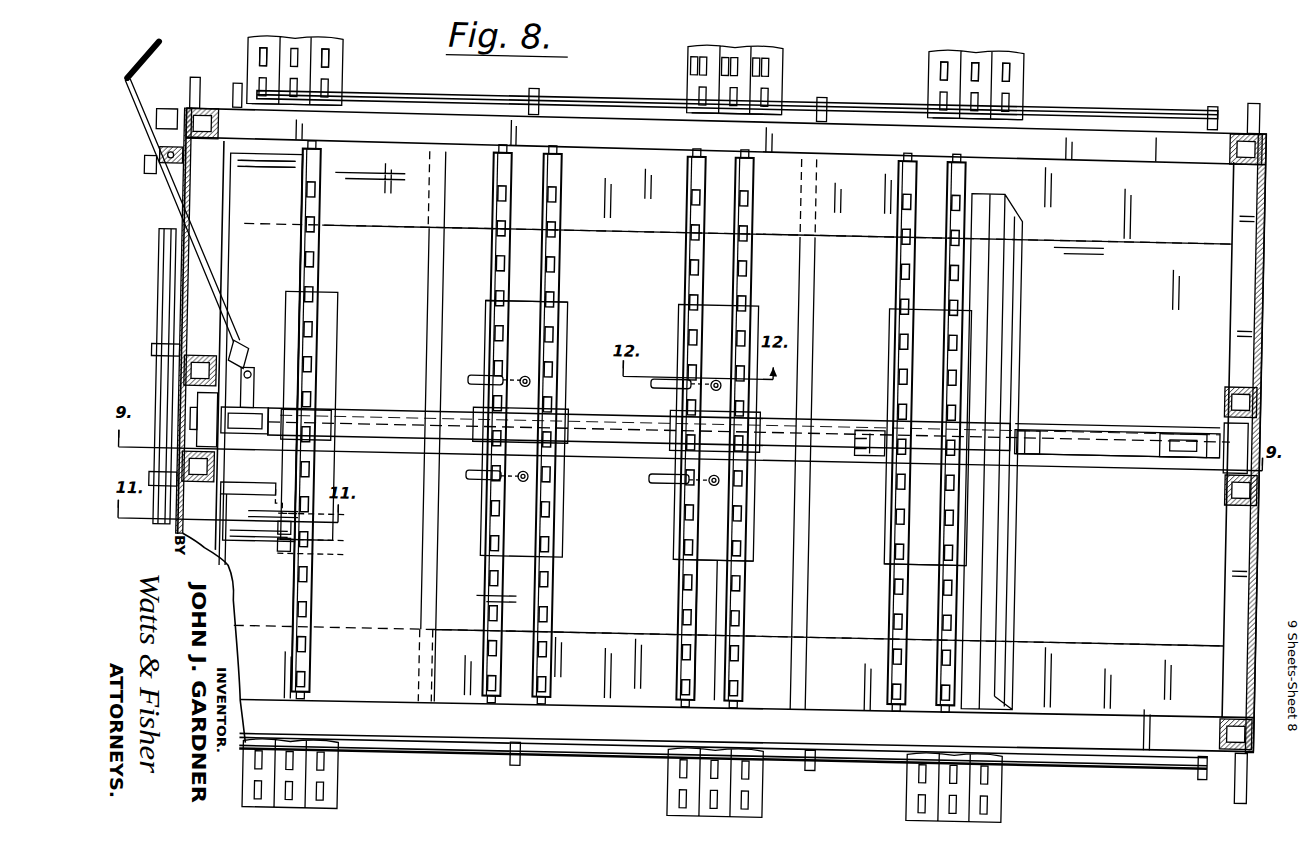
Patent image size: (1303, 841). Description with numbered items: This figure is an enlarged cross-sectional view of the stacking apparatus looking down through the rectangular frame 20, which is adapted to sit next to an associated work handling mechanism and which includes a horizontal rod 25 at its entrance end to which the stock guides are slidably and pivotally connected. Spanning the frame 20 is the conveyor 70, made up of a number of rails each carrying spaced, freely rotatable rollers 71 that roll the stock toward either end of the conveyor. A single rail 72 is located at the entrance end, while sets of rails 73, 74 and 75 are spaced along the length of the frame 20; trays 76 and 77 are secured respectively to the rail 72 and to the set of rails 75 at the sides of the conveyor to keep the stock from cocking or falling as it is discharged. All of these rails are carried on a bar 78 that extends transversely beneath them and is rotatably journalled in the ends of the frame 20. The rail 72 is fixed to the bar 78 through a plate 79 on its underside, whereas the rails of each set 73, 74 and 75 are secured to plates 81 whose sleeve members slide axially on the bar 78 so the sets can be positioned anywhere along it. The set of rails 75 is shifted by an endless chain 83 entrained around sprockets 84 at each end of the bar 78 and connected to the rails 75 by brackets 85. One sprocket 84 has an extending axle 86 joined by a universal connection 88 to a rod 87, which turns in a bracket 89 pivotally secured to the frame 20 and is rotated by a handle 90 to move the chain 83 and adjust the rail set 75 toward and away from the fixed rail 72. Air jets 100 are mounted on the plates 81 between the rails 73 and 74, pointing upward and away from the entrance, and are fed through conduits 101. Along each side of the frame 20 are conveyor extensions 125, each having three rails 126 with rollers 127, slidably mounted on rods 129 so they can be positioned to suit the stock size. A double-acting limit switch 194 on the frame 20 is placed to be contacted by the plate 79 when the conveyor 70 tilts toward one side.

The rectangular frame 20 is at (1258, 160).
The horizontal rod 25 is at (169, 273).
The conveyor 70 is at (566, 316).
The rollers 71 is at (315, 300).
The rail 72 is at (300, 296).
The set of rails 73 is at (487, 304).
The set of rails 74 is at (692, 550).
The set of rails 75 is at (897, 546).
The tray 76 is at (328, 318).
The tray 77 is at (998, 349).
The bar 78 is at (1069, 412).
The plate 79 is at (318, 338).
The plates 81 is at (717, 302).
The chain 83 is at (344, 427).
The sprockets 84 is at (241, 440).
The brackets 85 is at (869, 421).
The axle 86 is at (249, 409).
The rod 87 is at (212, 311).
The universal connection 88 is at (244, 360).
The bracket 89 is at (150, 192).
The handle 90 is at (152, 56).
The air jets 100 is at (527, 382).
The conduits 101 is at (466, 383).
The conveyor extensions 125 is at (340, 55).
The rails 126 is at (252, 58).
The rollers 127 is at (337, 78).
The rods 129 is at (483, 104).
The double-acting limit switch 194 is at (271, 494).